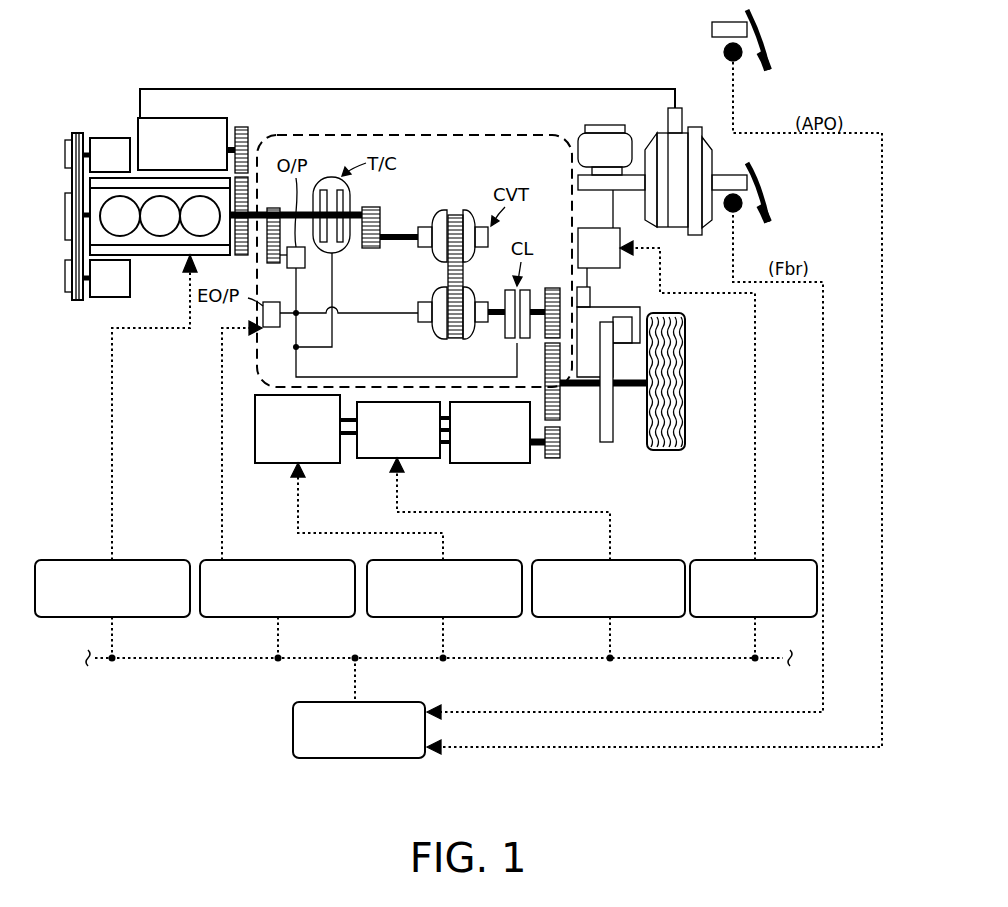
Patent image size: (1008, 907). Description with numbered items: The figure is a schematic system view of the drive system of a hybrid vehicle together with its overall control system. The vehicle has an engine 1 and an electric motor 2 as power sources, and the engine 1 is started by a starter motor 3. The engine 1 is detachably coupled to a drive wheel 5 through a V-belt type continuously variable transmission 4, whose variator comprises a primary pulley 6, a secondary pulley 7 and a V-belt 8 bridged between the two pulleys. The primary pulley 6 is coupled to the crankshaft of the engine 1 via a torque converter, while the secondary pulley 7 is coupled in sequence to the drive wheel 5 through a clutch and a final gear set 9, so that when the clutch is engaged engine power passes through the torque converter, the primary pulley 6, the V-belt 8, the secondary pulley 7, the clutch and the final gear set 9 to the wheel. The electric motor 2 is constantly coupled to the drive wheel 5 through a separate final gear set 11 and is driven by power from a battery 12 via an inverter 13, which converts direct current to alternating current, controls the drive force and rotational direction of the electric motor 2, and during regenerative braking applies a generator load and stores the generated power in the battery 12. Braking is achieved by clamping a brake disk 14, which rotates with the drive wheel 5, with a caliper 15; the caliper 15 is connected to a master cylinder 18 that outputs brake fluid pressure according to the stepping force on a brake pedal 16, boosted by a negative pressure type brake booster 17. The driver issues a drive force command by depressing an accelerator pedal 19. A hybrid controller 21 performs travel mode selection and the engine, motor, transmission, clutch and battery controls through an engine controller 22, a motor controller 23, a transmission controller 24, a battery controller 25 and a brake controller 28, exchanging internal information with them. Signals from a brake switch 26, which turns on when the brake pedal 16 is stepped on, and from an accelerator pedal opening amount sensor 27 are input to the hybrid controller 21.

The engine 1 is at (159, 265).
The electric motor 2 is at (510, 463).
The starter motor 3 is at (192, 118).
The V-belt type continuously variable transmission 4 is at (496, 134).
The drive wheel 5 is at (689, 322).
The primary pulley 6 is at (435, 222).
The secondary pulley 7 is at (433, 337).
The V-belt 8 is at (447, 268).
The final gear set 9 is at (543, 372).
The final gear set 11 is at (560, 440).
The battery 12 is at (270, 463).
The inverter 13 is at (378, 458).
The brake disk 14 is at (613, 430).
The caliper 15 is at (630, 307).
The brake pedal 16 is at (770, 212).
The brake booster 17 is at (678, 228).
The master cylinder 18 is at (631, 192).
The accelerator pedal 19 is at (768, 48).
The hybrid controller 21 is at (293, 718).
The engine controller 22 is at (172, 560).
The motor controller 23 is at (667, 560).
The transmission controller 24 is at (266, 560).
The battery controller 25 is at (491, 560).
The brake switch 26 is at (736, 215).
The accelerator pedal opening amount sensor 27 is at (738, 62).
The brake controller 28 is at (794, 560).